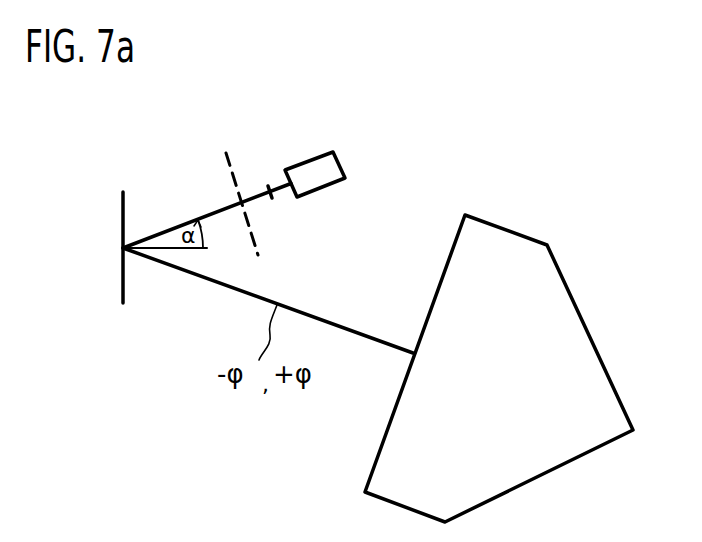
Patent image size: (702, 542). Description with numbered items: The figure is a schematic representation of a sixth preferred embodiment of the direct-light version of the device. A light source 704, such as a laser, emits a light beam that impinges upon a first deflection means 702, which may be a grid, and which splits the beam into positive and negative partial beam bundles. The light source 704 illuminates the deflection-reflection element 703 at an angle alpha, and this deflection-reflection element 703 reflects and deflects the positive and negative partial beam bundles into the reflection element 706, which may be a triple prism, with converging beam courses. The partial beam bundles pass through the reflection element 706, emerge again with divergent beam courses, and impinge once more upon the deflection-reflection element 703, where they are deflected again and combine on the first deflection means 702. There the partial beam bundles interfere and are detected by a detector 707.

The first deflection means 702 is at (228, 163).
The deflection-reflection element 703 is at (123, 237).
The light source 704 is at (330, 165).
The reflection element 706 is at (499, 368).
The detector 707 is at (275, 196).